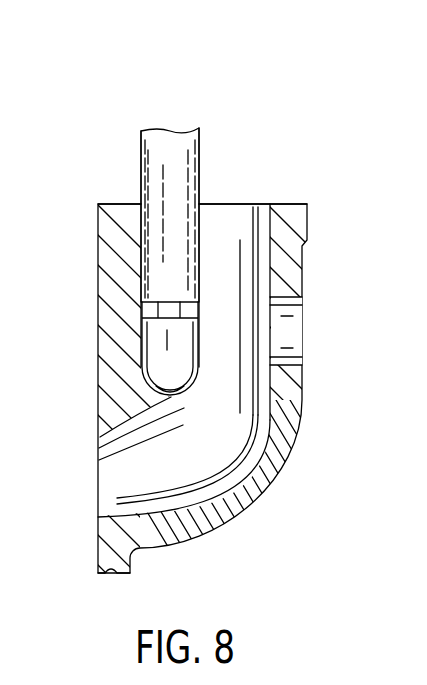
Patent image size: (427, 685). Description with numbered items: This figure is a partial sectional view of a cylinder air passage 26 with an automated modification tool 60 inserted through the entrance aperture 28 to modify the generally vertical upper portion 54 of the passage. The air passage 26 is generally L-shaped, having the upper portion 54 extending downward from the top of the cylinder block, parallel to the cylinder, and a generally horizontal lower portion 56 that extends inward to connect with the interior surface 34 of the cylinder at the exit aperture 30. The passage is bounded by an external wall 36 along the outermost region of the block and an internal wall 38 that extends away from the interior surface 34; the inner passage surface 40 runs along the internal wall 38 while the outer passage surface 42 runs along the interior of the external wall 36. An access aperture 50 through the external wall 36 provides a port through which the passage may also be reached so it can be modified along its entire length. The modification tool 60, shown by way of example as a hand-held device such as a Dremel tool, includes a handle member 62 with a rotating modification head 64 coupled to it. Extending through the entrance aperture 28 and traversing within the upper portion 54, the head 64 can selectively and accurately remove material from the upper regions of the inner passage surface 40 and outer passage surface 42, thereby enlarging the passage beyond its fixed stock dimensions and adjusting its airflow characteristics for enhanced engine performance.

The air passage 26 is at (222, 153).
The entrance aperture 28 is at (260, 203).
The exit aperture 30 is at (98, 451).
The interior surface 34 is at (98, 283).
The external wall 36 is at (303, 280).
The internal wall 38 is at (125, 205).
The inner passage surface 40 is at (122, 435).
The outer passage surface 42 is at (238, 475).
The access aperture 50 is at (303, 347).
The upper portion 54 is at (228, 218).
The lower portion 56 is at (110, 497).
The automated modification tool 60 is at (130, 107).
The handle member 62 is at (147, 132).
The rotating modification head 64 is at (199, 372).